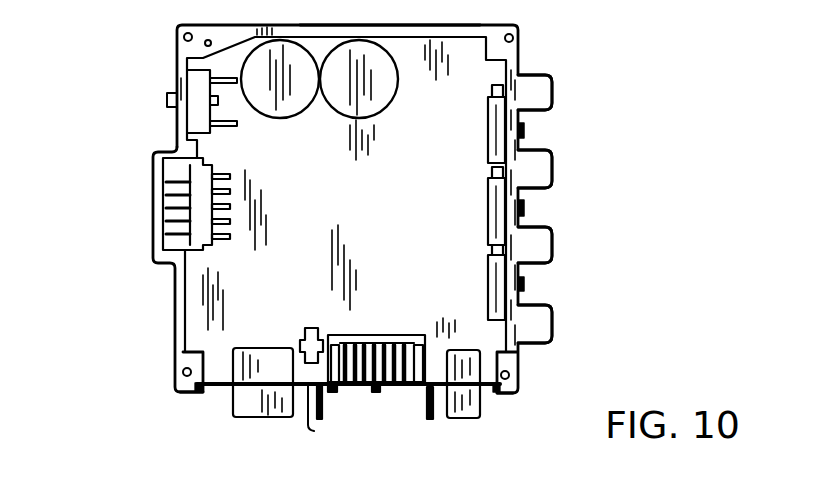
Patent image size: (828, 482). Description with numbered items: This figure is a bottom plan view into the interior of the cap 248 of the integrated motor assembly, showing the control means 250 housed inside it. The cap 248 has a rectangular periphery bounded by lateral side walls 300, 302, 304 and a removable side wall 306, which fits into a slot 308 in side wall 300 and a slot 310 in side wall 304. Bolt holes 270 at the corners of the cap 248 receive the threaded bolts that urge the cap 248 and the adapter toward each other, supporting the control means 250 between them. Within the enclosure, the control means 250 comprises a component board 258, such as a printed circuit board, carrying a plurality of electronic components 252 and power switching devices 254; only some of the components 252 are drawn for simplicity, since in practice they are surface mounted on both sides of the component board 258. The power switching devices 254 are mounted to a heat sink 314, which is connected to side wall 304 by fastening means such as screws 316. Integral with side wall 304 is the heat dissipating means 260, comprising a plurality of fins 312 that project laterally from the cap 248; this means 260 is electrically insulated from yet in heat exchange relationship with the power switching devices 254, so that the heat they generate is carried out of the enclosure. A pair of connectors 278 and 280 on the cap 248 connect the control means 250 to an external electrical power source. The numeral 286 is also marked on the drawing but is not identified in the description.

The cap 248 is at (140, 214).
The control means 250 is at (462, 81).
The electronic components 252 is at (331, 108).
The power switching devices 254 is at (456, 202).
The component board 258 is at (207, 288).
The heat dissipating means 260 is at (617, 209).
The bolt holes 270 is at (183, 39).
The connector 278 is at (261, 417).
The connector 280 is at (462, 420).
The housing 286 is at (6, 0).
The lateral side wall 300 is at (173, 318).
The lateral side wall 302 is at (399, 25).
The lateral side wall 304 is at (524, 168).
The removable side wall 306 is at (315, 420).
The slot 308 is at (205, 392).
The slot 310 is at (500, 393).
The fins 312 is at (598, 209).
The heat sink 314 is at (489, 134).
The screws 316 is at (525, 131).